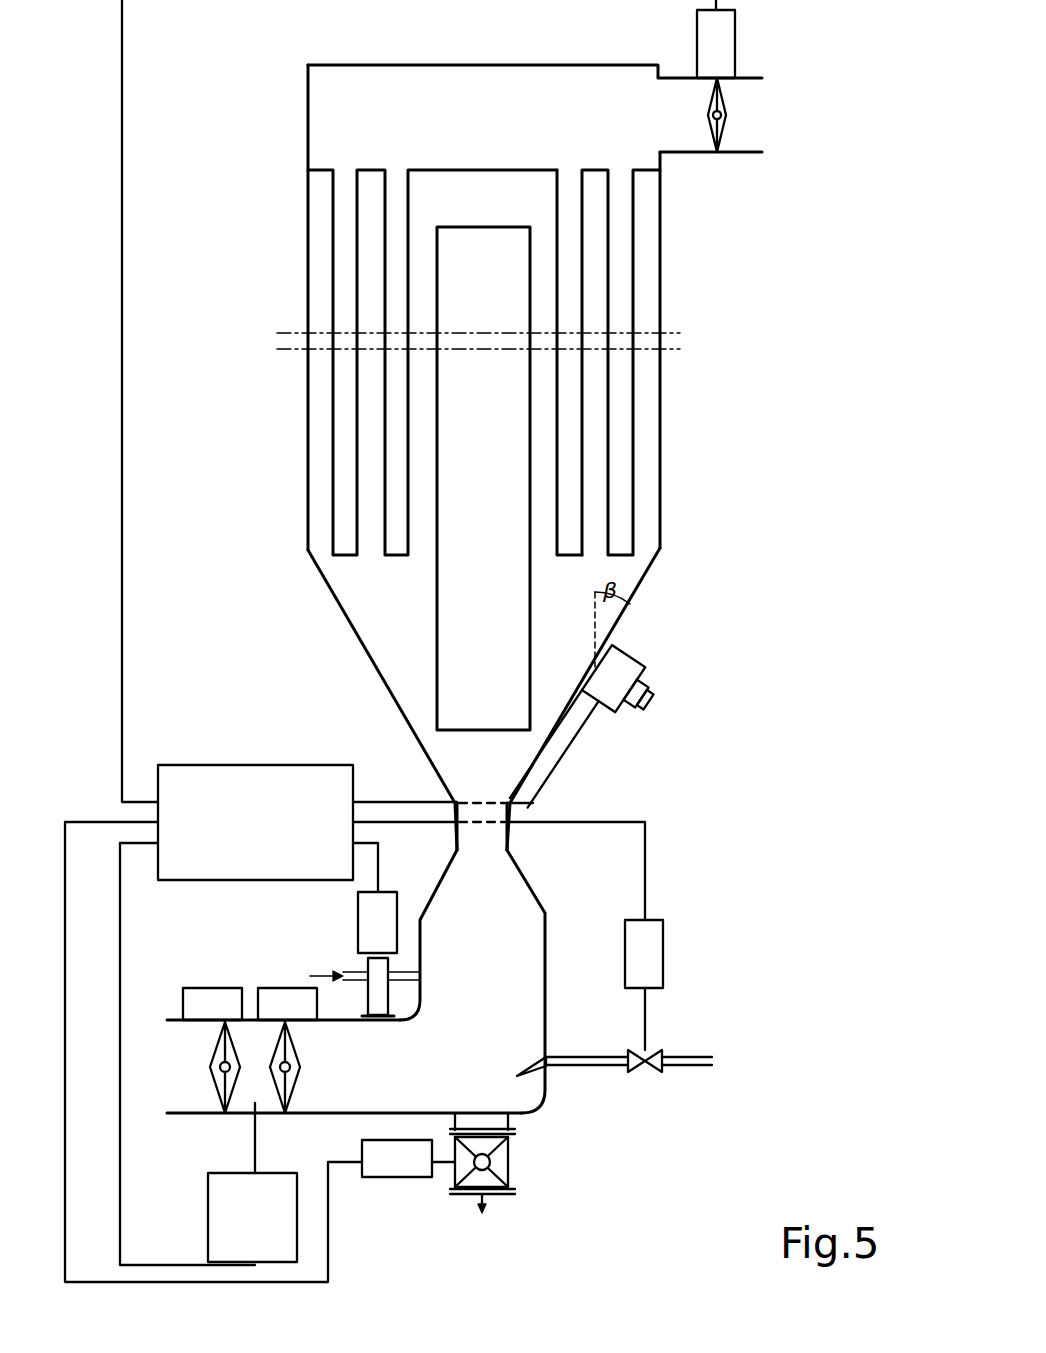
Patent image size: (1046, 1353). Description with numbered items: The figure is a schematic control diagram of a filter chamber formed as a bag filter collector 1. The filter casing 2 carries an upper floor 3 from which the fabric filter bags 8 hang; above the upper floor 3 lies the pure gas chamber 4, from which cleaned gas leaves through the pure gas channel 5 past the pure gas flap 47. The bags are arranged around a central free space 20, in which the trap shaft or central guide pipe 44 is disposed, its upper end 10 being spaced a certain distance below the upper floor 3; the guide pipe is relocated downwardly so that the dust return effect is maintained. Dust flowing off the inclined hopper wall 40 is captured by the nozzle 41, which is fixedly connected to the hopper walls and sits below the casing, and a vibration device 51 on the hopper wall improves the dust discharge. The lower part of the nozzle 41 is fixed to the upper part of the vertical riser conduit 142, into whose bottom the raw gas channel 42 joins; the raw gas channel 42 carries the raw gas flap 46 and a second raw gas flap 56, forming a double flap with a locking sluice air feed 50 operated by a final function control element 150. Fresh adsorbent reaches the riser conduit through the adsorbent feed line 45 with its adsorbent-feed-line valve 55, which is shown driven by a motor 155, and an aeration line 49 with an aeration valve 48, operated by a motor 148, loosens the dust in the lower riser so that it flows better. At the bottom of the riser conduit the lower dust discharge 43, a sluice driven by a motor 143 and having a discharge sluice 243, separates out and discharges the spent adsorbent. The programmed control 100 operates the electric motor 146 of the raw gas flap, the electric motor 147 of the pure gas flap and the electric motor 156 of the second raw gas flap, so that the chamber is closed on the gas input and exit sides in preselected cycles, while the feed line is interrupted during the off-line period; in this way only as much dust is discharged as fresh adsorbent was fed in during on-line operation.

The bag filter collector 1 is at (275, 362).
The filter casing 2 is at (308, 230).
The upper floor 3 is at (490, 178).
The pure gas chamber 4 is at (507, 73).
The pure gas channel 5 is at (672, 88).
The fabric filter bags 8 is at (617, 270).
The upper end of trap shaft 10 is at (483, 462).
The central free space 20 is at (543, 392).
The inclined hopper wall 40 is at (383, 687).
The nozzle 41 is at (510, 843).
The raw gas channel 42 is at (188, 1093).
The lower dust discharge 43 is at (503, 1160).
The central guide pipe 44 is at (435, 555).
The adsorbent feed line 45 is at (348, 968).
The raw gas flap 46 is at (220, 1047).
The pure gas flap 47 is at (723, 125).
The aeration valve 48 is at (667, 1055).
The aeration line 49 is at (575, 1065).
The locking sluice air feed 50 is at (255, 1152).
The vibration device 51 is at (623, 672).
The adsorbent-feed-line valve 55 is at (380, 985).
The second raw gas flap 56 is at (293, 1087).
The programmed control 100 is at (240, 772).
The vertical riser conduit 142 is at (518, 963).
The motor 143 is at (385, 1180).
The electric motor 146 is at (227, 995).
The electric motor 147 is at (725, 62).
The motor 148 is at (658, 937).
The final function control element 150 is at (213, 1230).
The motor 155 is at (393, 900).
The electric motor 156 is at (283, 995).
The discharge sluice 243 is at (507, 1192).